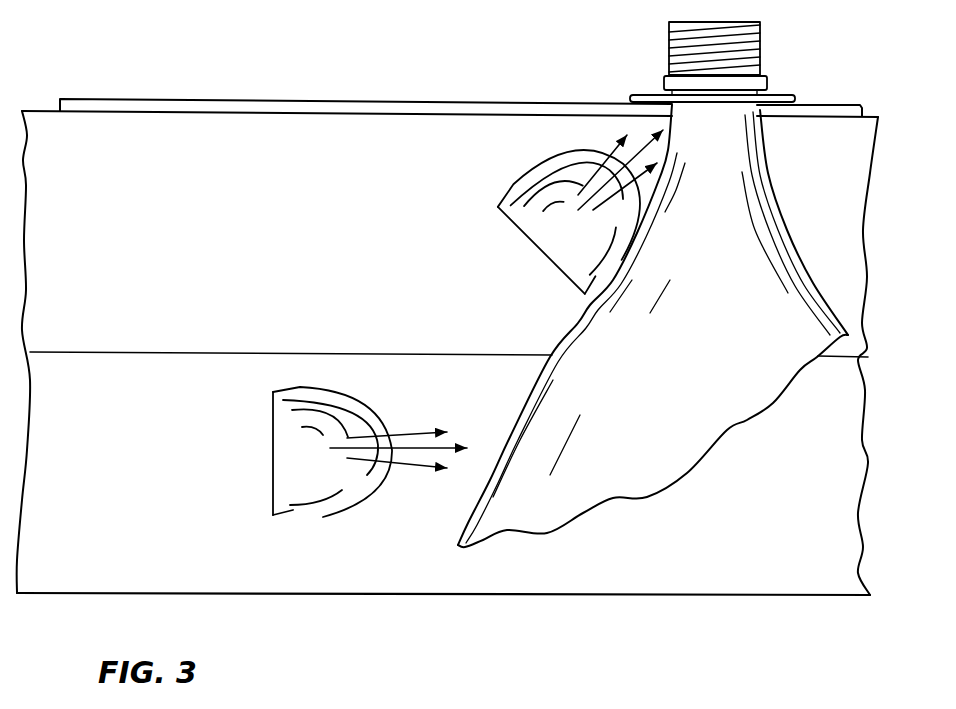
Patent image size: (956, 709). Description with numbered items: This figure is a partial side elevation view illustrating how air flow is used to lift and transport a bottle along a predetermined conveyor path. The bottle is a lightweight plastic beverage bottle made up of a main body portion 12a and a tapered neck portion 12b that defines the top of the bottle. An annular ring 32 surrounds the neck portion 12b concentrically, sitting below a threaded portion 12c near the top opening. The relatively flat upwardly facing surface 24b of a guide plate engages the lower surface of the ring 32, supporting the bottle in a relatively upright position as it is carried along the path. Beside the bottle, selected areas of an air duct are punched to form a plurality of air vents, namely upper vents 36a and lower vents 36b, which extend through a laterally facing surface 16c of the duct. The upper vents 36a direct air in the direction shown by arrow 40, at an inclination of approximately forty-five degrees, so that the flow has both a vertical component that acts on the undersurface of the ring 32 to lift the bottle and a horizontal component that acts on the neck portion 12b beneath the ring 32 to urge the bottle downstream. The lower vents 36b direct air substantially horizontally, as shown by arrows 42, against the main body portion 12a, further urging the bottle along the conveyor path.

The main body portion 12a is at (512, 406).
The tapered neck portion 12b is at (770, 153).
The threaded portion 12c is at (668, 53).
The laterally facing surface 16c is at (300, 244).
The upwardly facing surface 24b is at (455, 99).
The annular ring 32 is at (783, 95).
The upper vents 36a is at (548, 233).
The lower vents 36b is at (285, 447).
The arrow 40 is at (602, 148).
The arrows 42 is at (405, 436).